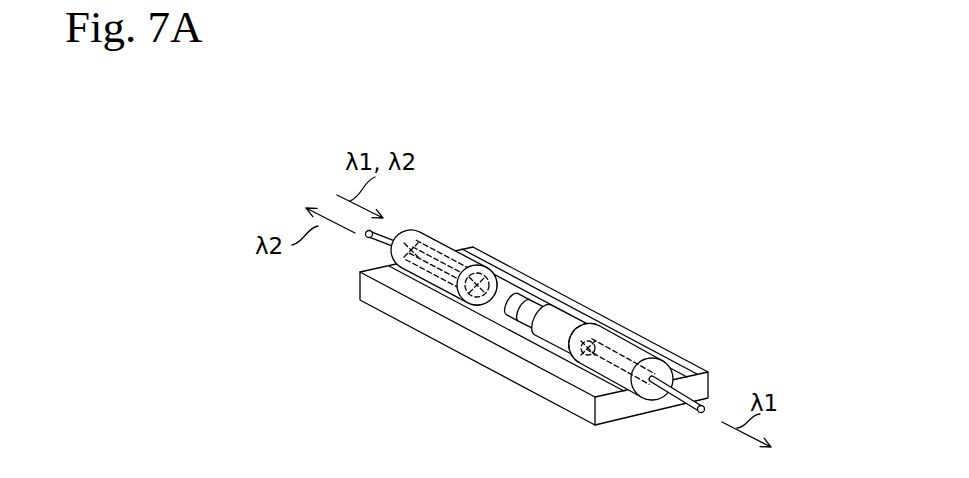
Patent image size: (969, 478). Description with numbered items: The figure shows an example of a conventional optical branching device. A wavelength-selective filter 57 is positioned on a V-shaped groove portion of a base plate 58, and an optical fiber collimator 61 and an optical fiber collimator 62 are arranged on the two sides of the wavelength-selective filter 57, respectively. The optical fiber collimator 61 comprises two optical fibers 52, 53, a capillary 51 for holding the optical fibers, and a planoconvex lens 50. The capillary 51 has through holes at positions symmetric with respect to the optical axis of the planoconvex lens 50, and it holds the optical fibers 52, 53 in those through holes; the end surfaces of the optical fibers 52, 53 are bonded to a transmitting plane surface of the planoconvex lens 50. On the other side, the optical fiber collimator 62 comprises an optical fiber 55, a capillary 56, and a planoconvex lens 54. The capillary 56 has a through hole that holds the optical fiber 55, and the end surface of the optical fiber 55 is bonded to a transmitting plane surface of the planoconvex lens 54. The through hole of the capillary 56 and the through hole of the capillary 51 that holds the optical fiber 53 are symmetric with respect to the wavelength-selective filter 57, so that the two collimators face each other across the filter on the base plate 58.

The planoconvex lens 50 is at (519, 281).
The capillary 51 is at (465, 249).
The optical fiber 52 is at (401, 238).
The optical fiber 53 is at (373, 241).
The planoconvex lens 54 is at (589, 309).
The optical fiber 55 is at (689, 398).
The capillary 56 is at (633, 355).
The wavelength-selective filter 57 is at (562, 289).
The base plate 58 is at (462, 338).
The optical fiber collimator 61 is at (422, 241).
The optical fiber collimator 62 is at (640, 327).